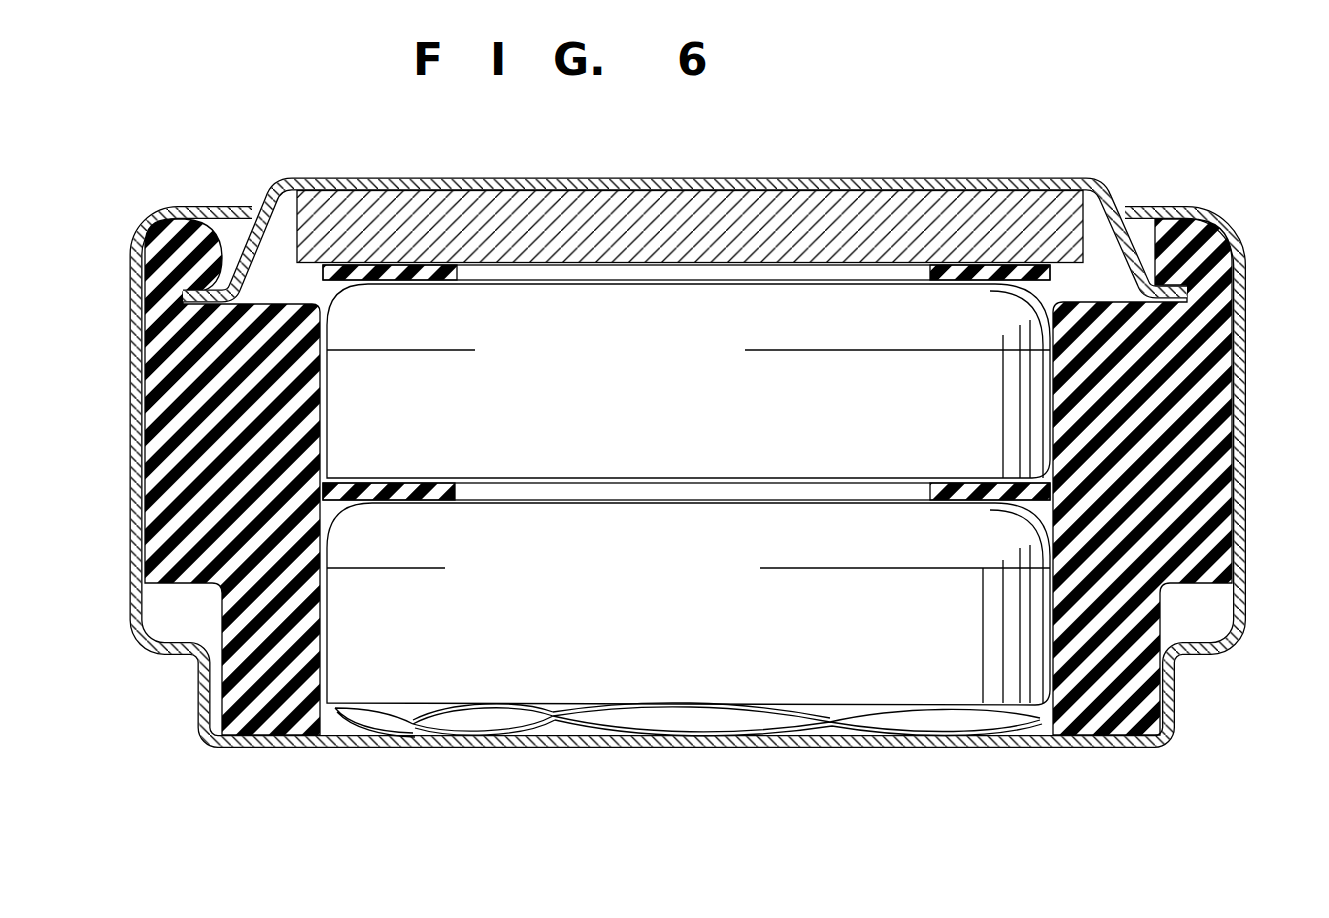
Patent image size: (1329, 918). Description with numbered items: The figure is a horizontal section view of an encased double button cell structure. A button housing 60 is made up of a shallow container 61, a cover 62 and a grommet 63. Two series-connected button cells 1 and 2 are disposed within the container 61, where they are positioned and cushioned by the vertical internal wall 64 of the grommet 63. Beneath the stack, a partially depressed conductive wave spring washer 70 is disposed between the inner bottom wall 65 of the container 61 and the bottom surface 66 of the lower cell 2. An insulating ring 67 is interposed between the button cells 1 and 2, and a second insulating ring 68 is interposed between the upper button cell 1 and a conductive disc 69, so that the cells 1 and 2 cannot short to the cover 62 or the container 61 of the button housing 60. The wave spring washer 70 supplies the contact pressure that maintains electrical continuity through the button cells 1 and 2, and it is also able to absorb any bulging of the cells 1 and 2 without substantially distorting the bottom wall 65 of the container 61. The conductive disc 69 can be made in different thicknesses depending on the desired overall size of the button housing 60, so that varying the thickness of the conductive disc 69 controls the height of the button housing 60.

The button cell 1 is at (626, 295).
The button cell 2 is at (990, 680).
The button housing 60 is at (720, 457).
The shallow container 61 is at (1243, 605).
The cover 62 is at (1011, 180).
The grommet 63 is at (1223, 560).
The vertical internal wall 64 is at (301, 273).
The inner bottom wall 65 is at (828, 727).
The bottom surface 66 is at (402, 707).
The insulating ring 67 is at (989, 485).
The insulating ring 68 is at (1052, 278).
The conductive disc 69 is at (795, 207).
The wave spring washer 70 is at (557, 715).